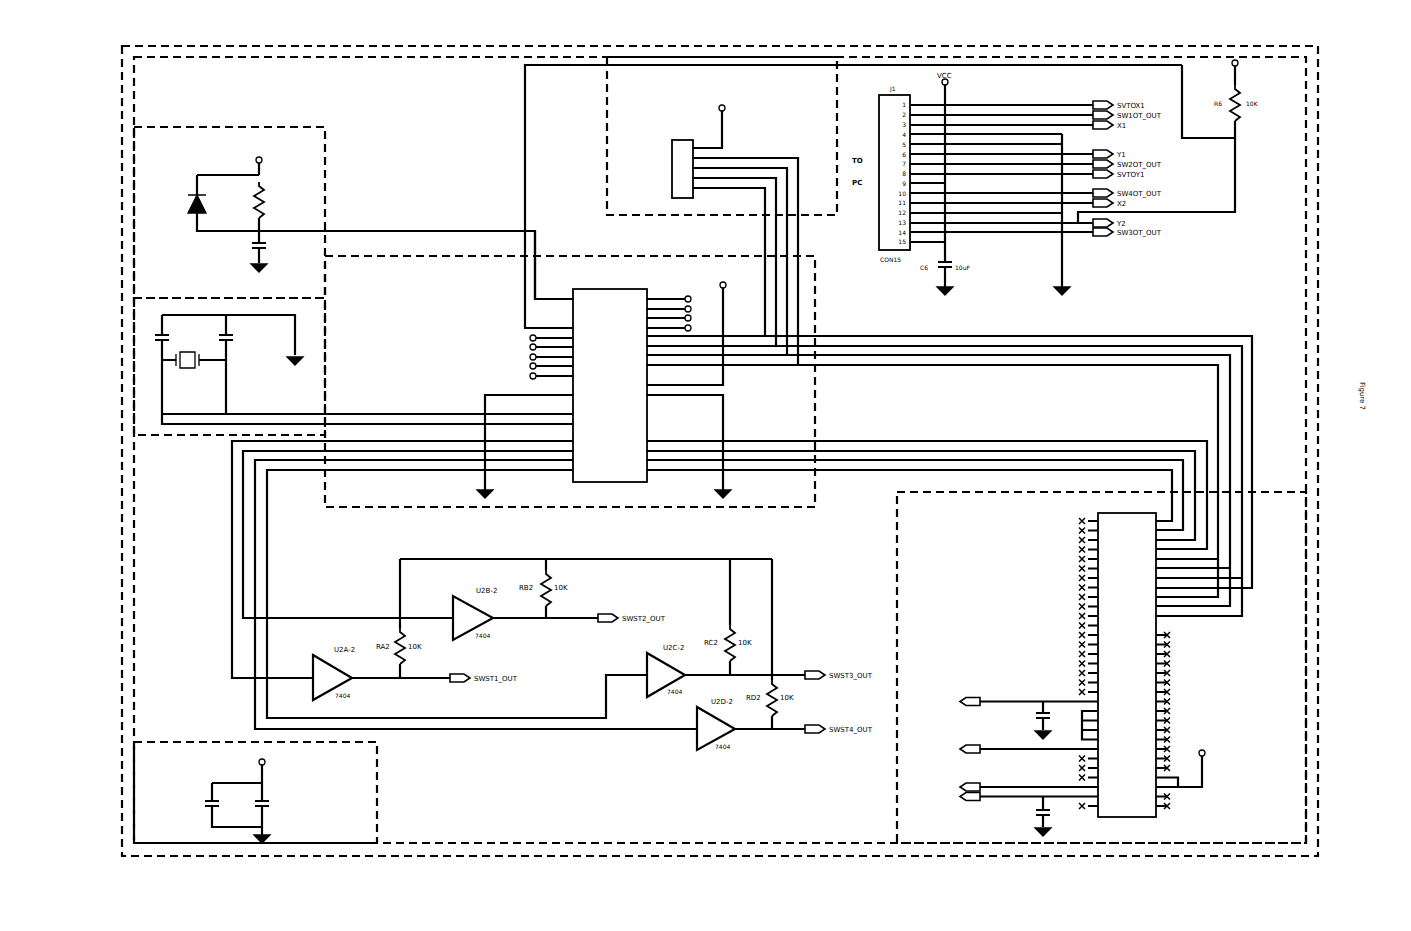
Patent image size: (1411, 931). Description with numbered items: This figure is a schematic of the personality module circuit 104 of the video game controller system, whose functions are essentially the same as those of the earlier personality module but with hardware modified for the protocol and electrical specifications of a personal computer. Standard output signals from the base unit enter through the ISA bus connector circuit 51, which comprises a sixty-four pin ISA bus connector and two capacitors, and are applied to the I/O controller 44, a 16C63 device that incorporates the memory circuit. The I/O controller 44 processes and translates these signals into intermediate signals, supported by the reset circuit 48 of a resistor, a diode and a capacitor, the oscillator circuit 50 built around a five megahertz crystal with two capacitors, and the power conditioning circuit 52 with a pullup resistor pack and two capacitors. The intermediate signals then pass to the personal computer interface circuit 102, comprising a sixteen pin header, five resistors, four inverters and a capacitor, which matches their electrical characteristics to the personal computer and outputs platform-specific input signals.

The I/O controller 44 is at (808, 316).
The reset circuit 48 is at (140, 150).
The oscillator circuit 50 is at (140, 318).
The ISA bus connector circuit 51 is at (1300, 758).
The power conditioning circuit 52 is at (612, 150).
The personal computer interface circuit 102 is at (1298, 150).
The personality module circuit 104 is at (1317, 375).